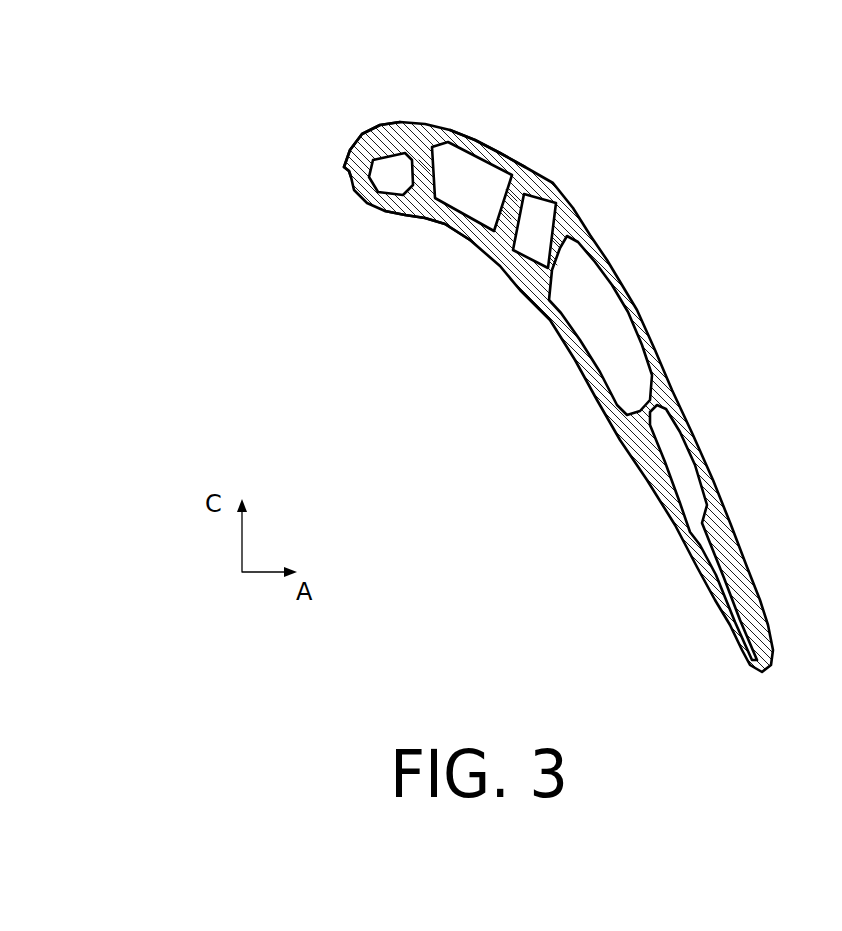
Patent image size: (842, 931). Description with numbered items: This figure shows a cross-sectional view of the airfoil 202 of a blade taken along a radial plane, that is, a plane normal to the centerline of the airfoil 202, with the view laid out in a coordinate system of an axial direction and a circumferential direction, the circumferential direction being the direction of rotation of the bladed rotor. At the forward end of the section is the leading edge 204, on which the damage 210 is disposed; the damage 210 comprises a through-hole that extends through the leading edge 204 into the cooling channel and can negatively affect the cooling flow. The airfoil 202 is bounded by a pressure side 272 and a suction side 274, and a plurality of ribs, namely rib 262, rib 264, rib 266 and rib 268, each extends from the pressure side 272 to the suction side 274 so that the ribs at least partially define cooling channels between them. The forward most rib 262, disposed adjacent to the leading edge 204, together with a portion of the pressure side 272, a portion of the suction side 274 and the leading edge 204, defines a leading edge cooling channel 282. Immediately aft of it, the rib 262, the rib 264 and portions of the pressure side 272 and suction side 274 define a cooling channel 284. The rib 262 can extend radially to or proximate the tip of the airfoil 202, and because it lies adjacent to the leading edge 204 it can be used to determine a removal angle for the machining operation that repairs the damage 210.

The airfoil 202 is at (232, 128).
The leading edge 204 is at (350, 161).
The damage 210 is at (344, 180).
The rib 262 is at (423, 154).
The rib 264 is at (528, 162).
The rib 266 is at (561, 232).
The rib 268 is at (641, 404).
The pressure side 272 is at (420, 222).
The suction side 274 is at (486, 137).
The leading edge cooling channel 282 is at (393, 173).
The cooling channel 284 is at (490, 200).